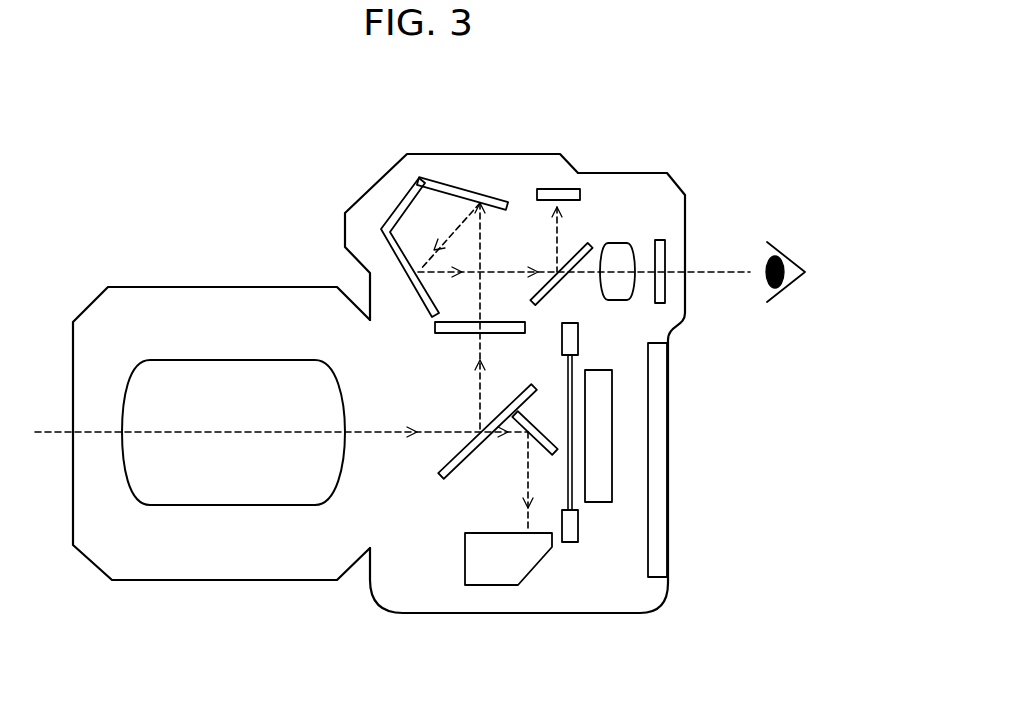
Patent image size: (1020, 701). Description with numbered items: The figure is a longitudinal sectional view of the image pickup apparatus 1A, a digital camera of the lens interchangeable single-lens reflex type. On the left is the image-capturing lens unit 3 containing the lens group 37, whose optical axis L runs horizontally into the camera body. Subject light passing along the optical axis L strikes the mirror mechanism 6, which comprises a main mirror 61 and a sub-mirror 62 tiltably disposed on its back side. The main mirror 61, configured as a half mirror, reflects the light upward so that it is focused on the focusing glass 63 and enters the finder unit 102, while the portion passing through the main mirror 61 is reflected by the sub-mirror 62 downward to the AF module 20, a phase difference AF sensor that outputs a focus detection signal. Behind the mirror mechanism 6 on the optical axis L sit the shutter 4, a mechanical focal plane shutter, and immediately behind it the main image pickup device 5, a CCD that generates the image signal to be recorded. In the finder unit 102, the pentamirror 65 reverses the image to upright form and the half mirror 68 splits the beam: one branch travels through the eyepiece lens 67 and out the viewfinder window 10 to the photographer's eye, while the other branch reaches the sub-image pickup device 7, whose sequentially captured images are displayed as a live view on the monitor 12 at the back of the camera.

The image pickup apparatus 1A is at (235, 108).
The image-capturing lens unit 3 is at (223, 583).
The lens group 37 is at (236, 360).
The optical axis L is at (50, 430).
The pentamirror 65 is at (438, 173).
The finder unit 102 is at (517, 185).
The sub-image pickup device 7 is at (557, 189).
The half mirror 68 is at (590, 245).
The eyepiece lens 67 is at (633, 248).
The viewfinder window 10 is at (667, 250).
The focusing glass 63 is at (450, 335).
The sub-mirror 62 is at (538, 428).
The main mirror 61 is at (440, 471).
The mirror mechanism 6 is at (469, 449).
The main image pickup device 5 is at (600, 370).
The shutter 4 is at (570, 545).
The AF module 20 is at (492, 585).
The monitor 12 is at (668, 460).